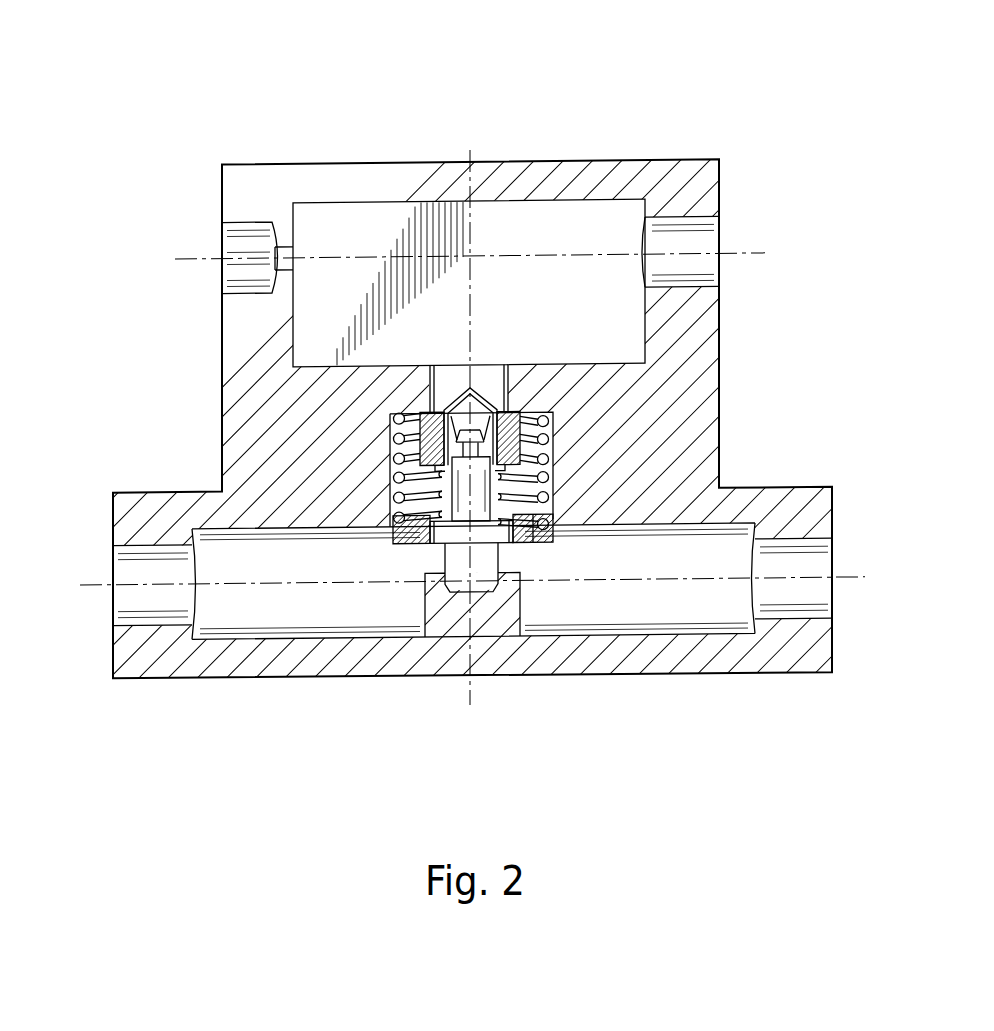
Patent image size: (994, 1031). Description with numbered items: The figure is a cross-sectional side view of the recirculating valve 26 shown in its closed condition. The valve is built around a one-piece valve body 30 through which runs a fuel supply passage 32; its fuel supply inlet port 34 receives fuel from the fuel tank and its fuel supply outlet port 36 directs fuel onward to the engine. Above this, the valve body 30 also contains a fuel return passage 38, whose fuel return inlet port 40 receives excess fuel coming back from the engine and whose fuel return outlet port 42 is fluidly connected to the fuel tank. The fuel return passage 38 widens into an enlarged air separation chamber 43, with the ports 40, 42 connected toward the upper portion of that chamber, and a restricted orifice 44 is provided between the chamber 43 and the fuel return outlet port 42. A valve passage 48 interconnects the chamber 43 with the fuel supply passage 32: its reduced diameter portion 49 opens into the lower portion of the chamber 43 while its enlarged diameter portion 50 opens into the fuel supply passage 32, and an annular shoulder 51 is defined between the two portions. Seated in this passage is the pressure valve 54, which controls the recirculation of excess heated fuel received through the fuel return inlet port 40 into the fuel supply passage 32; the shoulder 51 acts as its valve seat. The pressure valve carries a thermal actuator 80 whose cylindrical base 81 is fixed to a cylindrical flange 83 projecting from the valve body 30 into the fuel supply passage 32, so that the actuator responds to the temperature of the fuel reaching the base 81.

The recirculating valve 26 is at (762, 97).
The valve body 30 is at (705, 395).
The fuel supply passage 32 is at (388, 628).
The fuel supply inlet port 34 is at (131, 606).
The fuel supply outlet port 36 is at (818, 602).
The fuel return passage 38 is at (583, 206).
The fuel return inlet port 40 is at (696, 273).
The fuel return outlet port 42 is at (237, 271).
The air separation chamber 43 is at (529, 304).
The restricted orifice 44 is at (291, 254).
The valve passage 48 is at (494, 380).
The reduced diameter portion 49 is at (450, 366).
The enlarged diameter portion 50 is at (556, 458).
The annular shoulder 51 is at (403, 409).
The pressure valve 54 is at (348, 436).
The thermal actuator 80 is at (446, 560).
The cylindrical base 81 is at (491, 562).
The cylindrical flange 83 is at (522, 618).